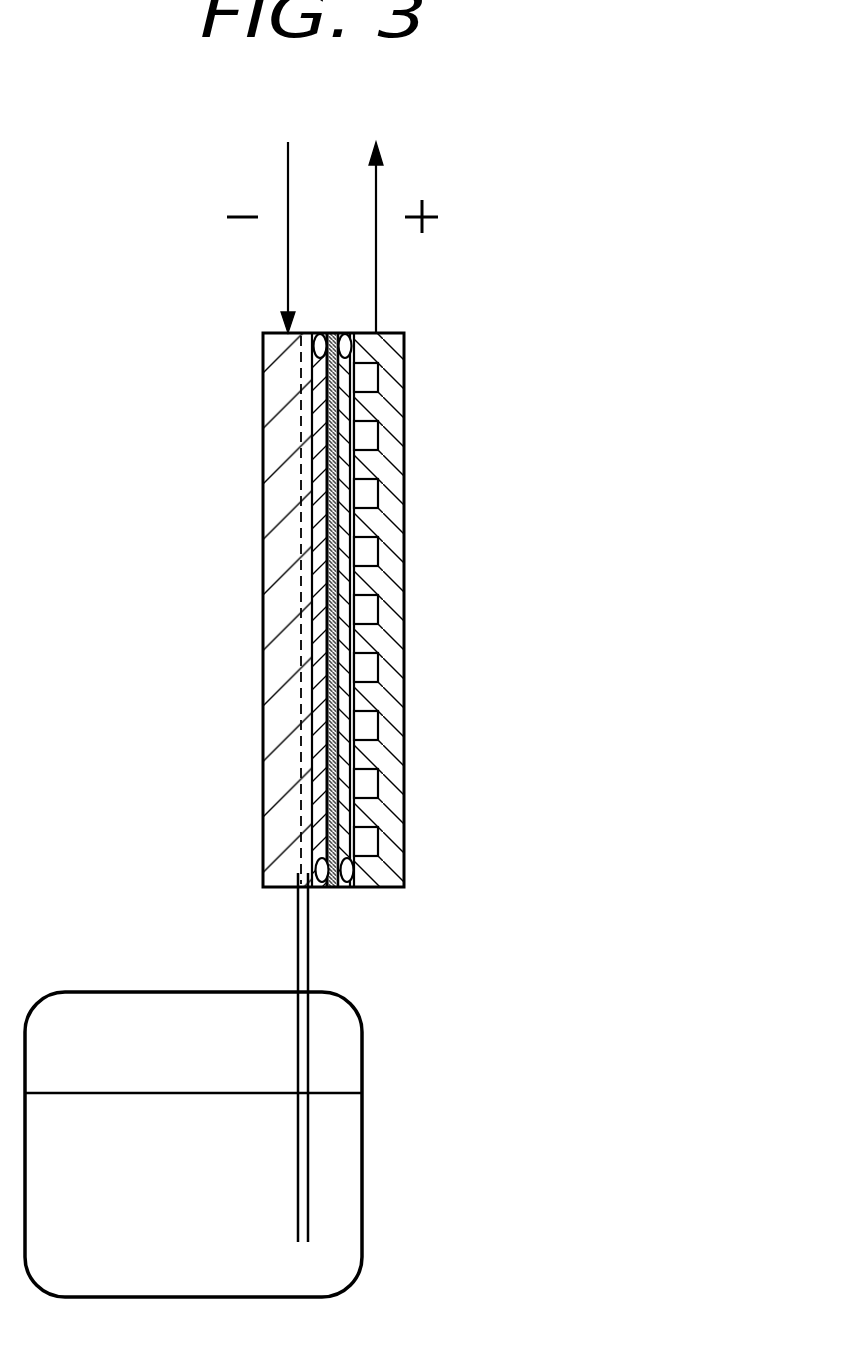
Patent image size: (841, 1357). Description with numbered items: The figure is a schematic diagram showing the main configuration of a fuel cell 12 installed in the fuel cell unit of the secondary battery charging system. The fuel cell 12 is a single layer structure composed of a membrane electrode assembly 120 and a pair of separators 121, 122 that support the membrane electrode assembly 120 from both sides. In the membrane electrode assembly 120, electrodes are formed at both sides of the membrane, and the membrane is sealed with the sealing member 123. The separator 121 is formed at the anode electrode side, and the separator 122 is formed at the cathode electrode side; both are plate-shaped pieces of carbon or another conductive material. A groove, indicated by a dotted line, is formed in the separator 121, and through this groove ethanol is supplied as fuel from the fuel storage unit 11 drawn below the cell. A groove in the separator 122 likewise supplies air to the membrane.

The fuel storage unit 11 is at (362, 1196).
The fuel cell 12 is at (355, 561).
The membrane electrode assembly 120 is at (352, 612).
The separator 121 is at (264, 680).
The separator 122 is at (403, 740).
The sealing member 123 is at (347, 880).